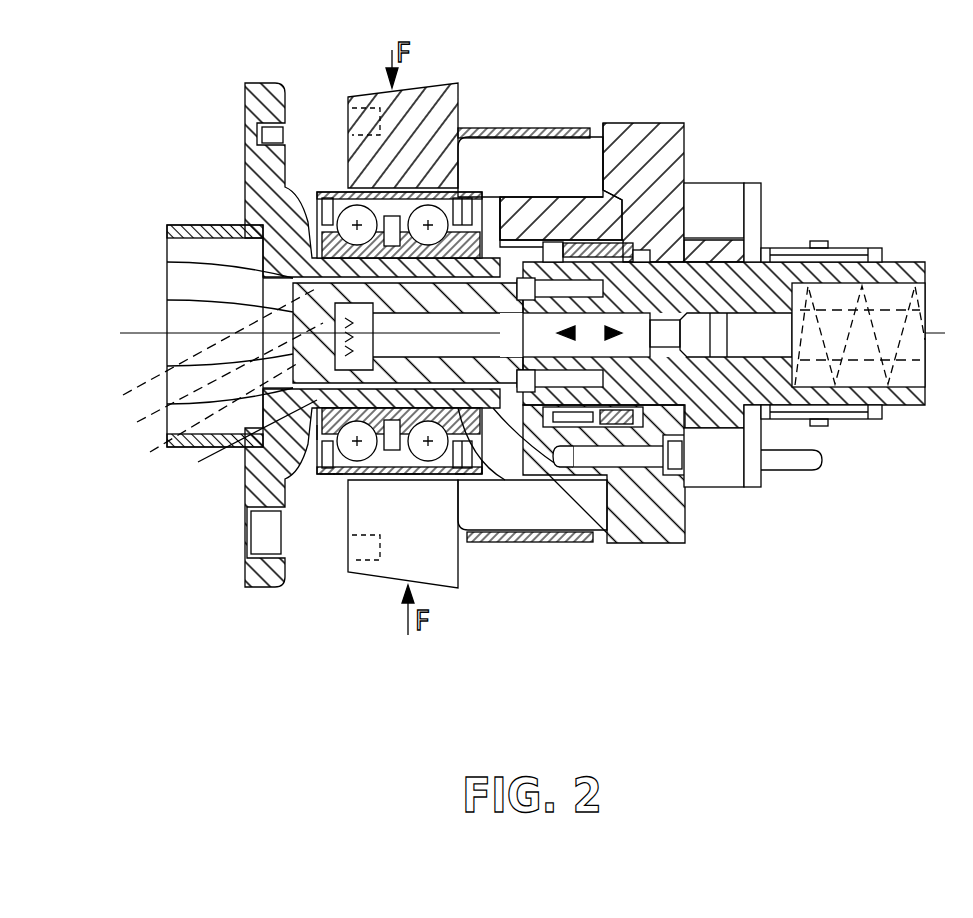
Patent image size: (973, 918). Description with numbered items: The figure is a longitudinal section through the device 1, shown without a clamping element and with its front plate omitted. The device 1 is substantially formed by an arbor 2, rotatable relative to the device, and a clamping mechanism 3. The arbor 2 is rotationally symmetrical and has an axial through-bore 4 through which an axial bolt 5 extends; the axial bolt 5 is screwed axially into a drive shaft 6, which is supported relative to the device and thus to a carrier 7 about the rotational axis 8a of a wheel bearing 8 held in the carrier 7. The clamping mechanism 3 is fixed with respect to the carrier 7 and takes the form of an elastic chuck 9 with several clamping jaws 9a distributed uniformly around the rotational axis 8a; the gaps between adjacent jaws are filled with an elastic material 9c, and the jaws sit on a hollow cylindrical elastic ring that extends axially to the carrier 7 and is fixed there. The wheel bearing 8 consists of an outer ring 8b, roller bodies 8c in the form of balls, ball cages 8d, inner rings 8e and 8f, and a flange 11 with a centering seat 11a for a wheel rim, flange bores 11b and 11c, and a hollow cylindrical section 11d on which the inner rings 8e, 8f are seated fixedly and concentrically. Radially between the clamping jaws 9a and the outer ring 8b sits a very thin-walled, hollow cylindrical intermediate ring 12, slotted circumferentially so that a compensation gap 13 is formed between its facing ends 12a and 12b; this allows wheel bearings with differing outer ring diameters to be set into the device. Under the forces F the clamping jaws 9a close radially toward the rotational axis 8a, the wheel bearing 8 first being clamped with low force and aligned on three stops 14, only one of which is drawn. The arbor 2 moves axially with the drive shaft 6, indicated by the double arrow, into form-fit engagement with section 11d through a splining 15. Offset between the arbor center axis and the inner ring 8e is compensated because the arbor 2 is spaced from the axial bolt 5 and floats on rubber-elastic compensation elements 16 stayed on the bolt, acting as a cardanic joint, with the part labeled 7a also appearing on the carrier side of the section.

The device 1 is at (762, 108).
The arbor 2 is at (246, 442).
The clamping mechanism 3 is at (397, 118).
The through-bore 4 is at (510, 318).
The axial bolt 5 is at (550, 225).
The drive shaft 6 is at (687, 293).
The carrier 7 is at (658, 145).
The housing flange 7a is at (557, 540).
The wheel bearing 8 is at (360, 192).
The rotational axis 8a is at (143, 335).
The outer ring 8b is at (343, 476).
The roller bodies 8c is at (417, 476).
The ball cages 8d is at (337, 476).
The inner ring 8e is at (317, 432).
The inner ring 8f is at (493, 487).
The elastic chuck 9 is at (458, 97).
The clamping jaws 9a is at (453, 520).
The elastic material 9c is at (460, 530).
The flange 11 is at (263, 208).
The centering seat 11a is at (243, 217).
The flange bore 11b is at (250, 548).
The flange bore 11c is at (257, 136).
The hollow cylindrical section 11d is at (167, 300).
The intermediate ring 12 is at (420, 185).
The end of intermediate ring 12a is at (192, 348).
The end of intermediate ring 12b is at (201, 381).
The compensation gap 13 is at (207, 423).
The stop 14 is at (497, 482).
The splining 15 is at (167, 262).
The compensation elements 16 is at (488, 258).